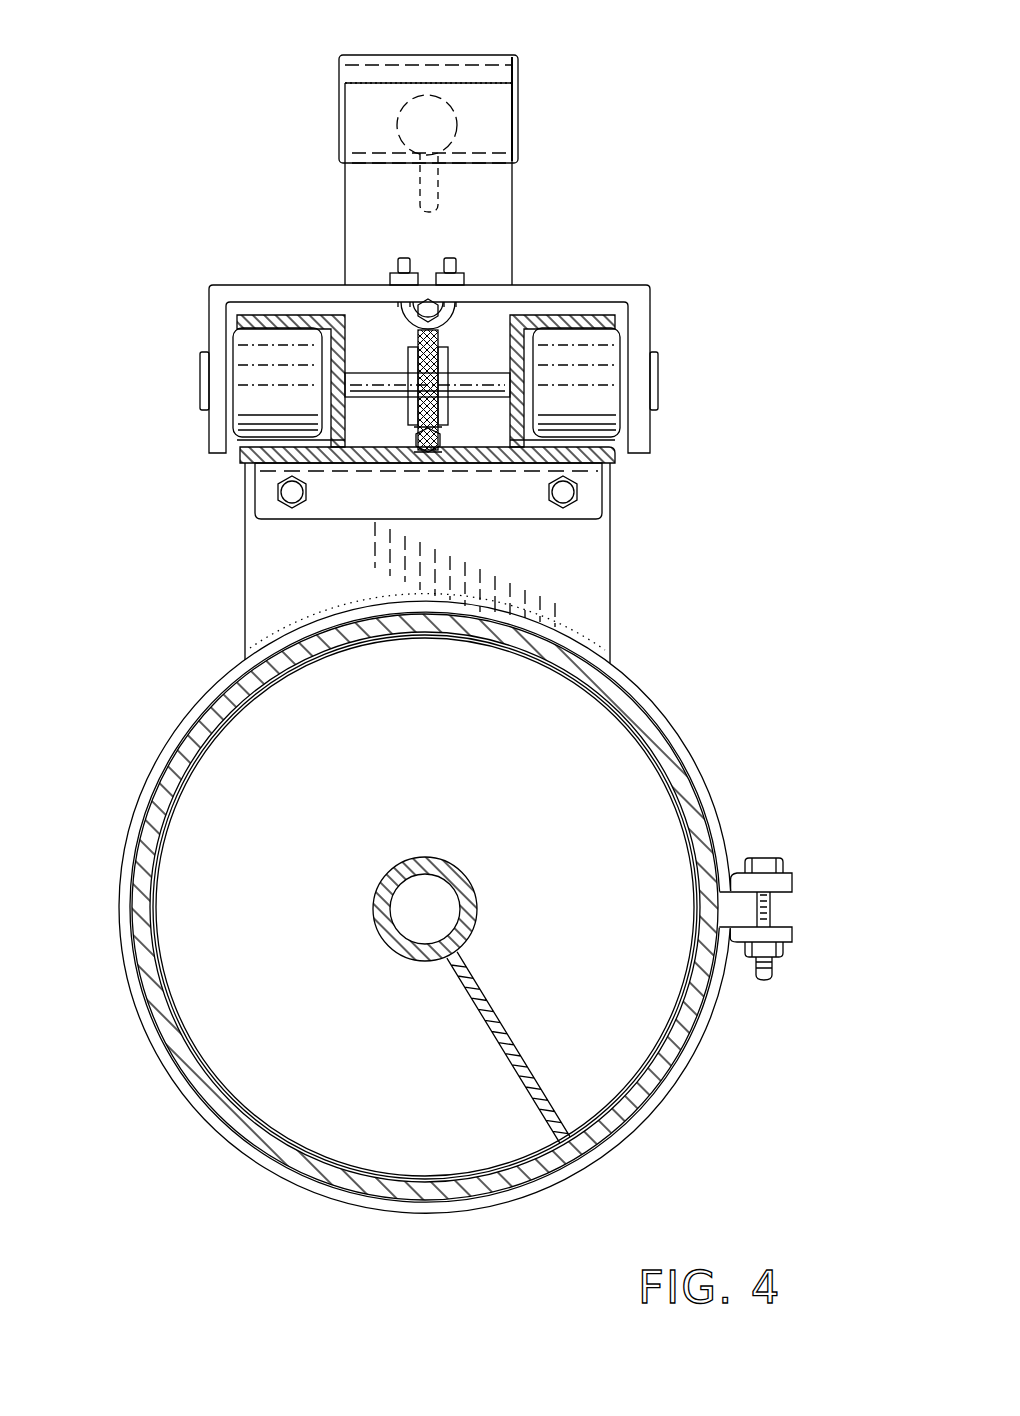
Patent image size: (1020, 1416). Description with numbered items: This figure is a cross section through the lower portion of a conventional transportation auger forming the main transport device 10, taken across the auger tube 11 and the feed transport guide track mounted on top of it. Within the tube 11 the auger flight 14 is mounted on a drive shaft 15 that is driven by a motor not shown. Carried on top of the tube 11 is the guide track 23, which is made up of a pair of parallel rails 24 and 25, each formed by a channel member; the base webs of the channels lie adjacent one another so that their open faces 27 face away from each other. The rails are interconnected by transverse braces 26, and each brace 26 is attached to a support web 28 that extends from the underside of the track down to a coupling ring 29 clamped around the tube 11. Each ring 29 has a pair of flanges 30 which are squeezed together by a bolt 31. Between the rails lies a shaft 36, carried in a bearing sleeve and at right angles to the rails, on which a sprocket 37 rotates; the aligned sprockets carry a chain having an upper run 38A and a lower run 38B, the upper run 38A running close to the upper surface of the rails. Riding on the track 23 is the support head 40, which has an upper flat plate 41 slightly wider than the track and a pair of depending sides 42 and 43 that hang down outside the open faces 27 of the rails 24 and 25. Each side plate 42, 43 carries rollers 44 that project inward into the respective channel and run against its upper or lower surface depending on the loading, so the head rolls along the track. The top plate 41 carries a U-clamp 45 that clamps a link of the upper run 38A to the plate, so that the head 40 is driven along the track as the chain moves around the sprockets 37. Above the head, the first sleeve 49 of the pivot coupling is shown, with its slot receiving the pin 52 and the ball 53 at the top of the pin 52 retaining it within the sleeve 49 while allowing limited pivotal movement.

The main transport device 10 is at (702, 730).
The auger tube 11 is at (152, 781).
The auger flight 14 is at (172, 878).
The drive shaft 15 is at (462, 877).
The guide track 23 is at (621, 467).
The rail 24 is at (578, 305).
The rail 25 is at (264, 314).
The transverse brace 26 is at (363, 500).
The open face 27 is at (228, 440).
The support web 28 is at (268, 575).
The coupling ring 29 is at (196, 695).
The flange 30 is at (786, 870).
The bolt 31 is at (769, 912).
The shaft 36 is at (487, 373).
The sprocket 37 is at (412, 402).
The upper run 38A is at (470, 303).
The lower run 38B is at (441, 444).
The support head 40 is at (203, 299).
The upper flat plate 41 is at (330, 283).
The depending side 42 is at (204, 423).
The depending side 43 is at (655, 421).
The roller 44 is at (248, 346).
The U-clamp 45 is at (421, 266).
The first sleeve 49 is at (386, 55).
The pin 52 is at (418, 186).
The ball 53 is at (514, 102).